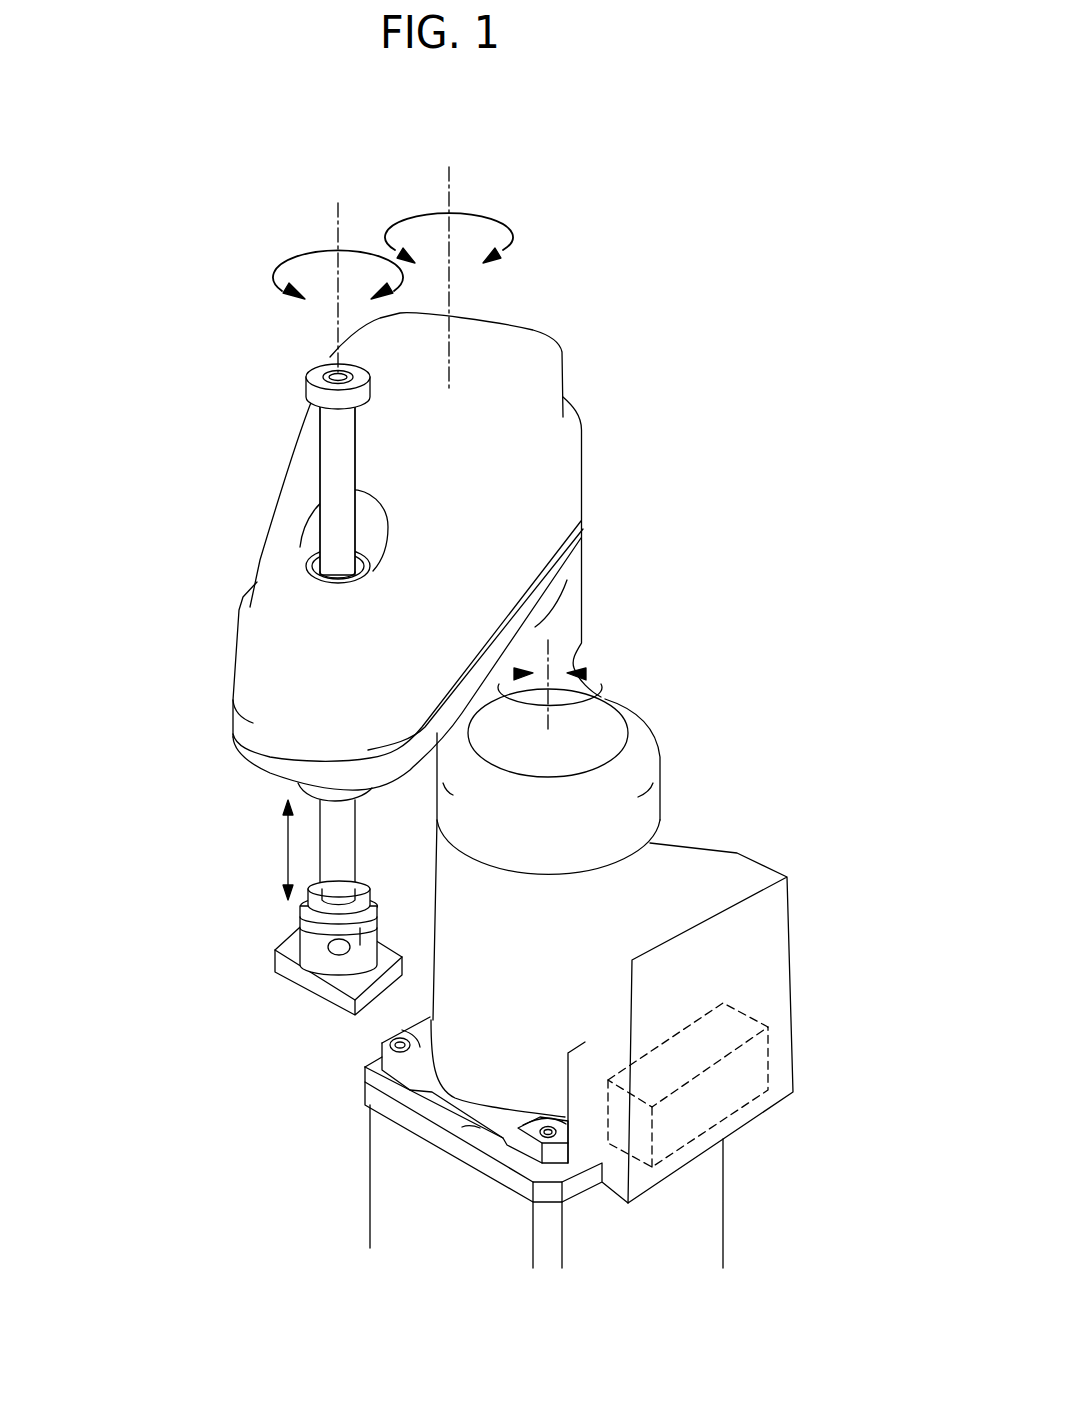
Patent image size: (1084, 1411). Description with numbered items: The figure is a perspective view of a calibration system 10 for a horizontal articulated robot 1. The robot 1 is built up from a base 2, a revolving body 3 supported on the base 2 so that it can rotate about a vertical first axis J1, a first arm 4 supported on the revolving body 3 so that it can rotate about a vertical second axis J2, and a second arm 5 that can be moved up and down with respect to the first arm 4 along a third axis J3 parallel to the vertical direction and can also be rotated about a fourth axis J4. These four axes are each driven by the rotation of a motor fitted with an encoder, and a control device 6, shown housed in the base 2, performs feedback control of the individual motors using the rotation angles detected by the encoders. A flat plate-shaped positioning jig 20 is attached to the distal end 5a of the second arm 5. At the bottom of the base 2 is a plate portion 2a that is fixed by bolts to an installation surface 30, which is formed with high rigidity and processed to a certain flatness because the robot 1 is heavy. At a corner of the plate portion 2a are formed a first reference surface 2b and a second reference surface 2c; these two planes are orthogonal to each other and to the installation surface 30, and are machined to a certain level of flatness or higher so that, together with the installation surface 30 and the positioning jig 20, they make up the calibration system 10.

The calibration system 10 is at (200, 183).
The horizontal articulated robot 1 is at (246, 443).
The base 2 is at (737, 970).
The plate portion 2a is at (508, 1163).
The first reference surface 2b is at (403, 1070).
The second reference surface 2c is at (395, 1035).
The revolving body 3 is at (560, 640).
The first arm 4 is at (285, 580).
The second arm 5 is at (333, 825).
The distal end 5a is at (303, 940).
The control device 6 is at (753, 1100).
The positioning jig 20 is at (275, 952).
The installation surface 30 is at (472, 1128).
The first axis J1 is at (550, 691).
The second axis J2 is at (449, 278).
The third axis J3 is at (271, 850).
The fourth axis J4 is at (338, 287).